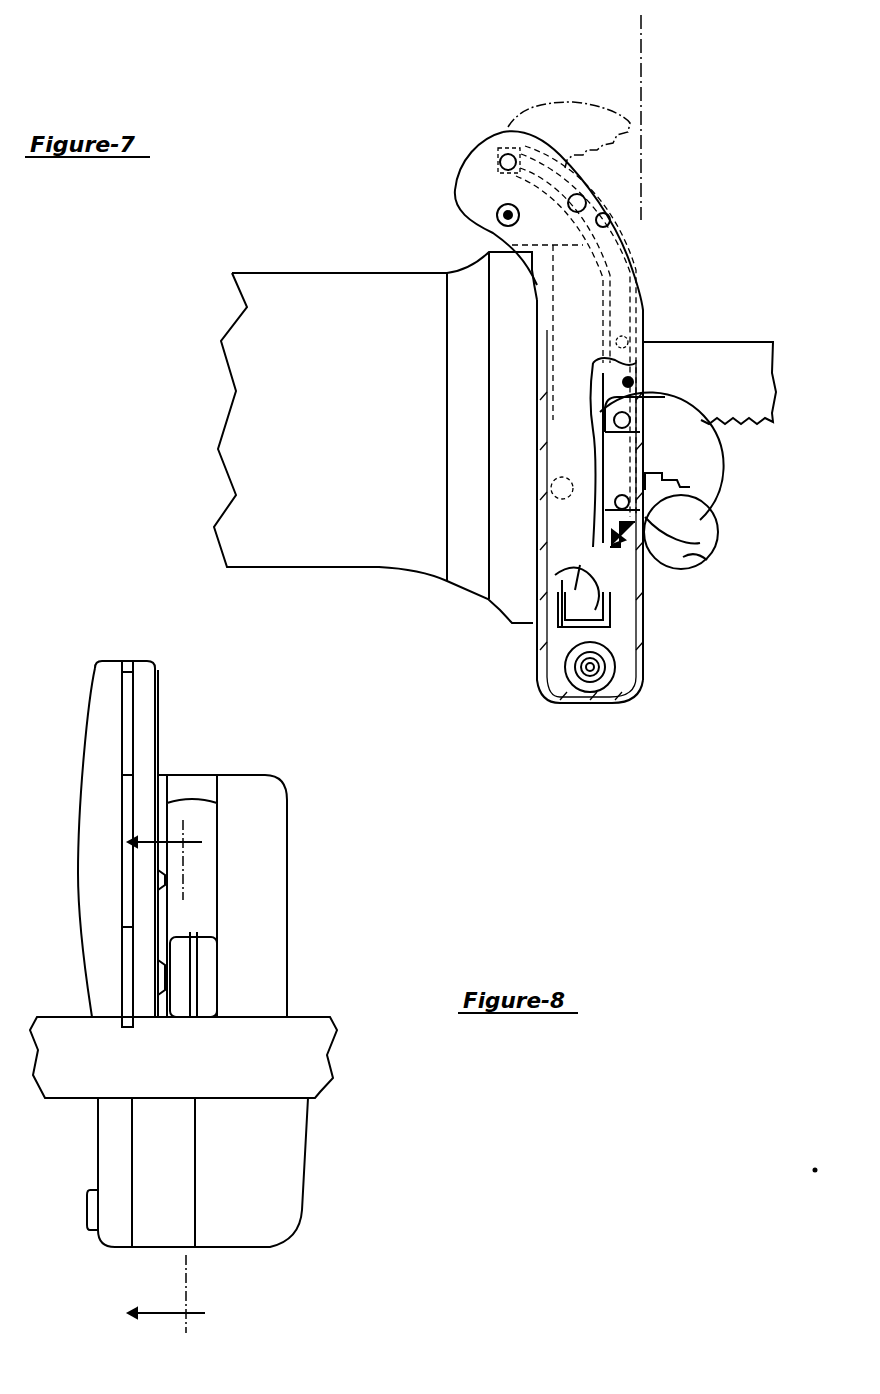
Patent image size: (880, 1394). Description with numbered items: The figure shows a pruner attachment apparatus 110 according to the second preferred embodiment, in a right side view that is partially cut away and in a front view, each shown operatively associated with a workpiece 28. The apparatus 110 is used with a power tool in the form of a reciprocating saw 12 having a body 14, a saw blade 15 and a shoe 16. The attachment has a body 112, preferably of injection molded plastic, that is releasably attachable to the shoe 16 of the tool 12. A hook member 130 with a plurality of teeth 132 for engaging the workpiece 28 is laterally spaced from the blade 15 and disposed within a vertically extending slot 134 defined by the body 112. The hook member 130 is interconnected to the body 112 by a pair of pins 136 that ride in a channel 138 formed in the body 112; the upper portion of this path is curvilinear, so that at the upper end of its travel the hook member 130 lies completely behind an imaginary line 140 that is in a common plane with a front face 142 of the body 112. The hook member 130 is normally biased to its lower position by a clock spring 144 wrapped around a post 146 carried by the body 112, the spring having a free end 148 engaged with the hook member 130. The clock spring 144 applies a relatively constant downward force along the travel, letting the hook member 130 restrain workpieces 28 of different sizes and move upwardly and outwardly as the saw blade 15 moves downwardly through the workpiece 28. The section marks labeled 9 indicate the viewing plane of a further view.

In FIG. 7, the reciprocating saw 12 is at (283, 260).
In FIG. 8, the reciprocating saw 12 is at (300, 790).
In FIG. 7, the body 14 is at (375, 270).
In FIG. 8, the body 14 is at (267, 776).
In FIG. 7, the saw blade 15 is at (740, 352).
In FIG. 8, the saw blade 15 is at (197, 990).
In FIG. 7, the shoe 16 is at (592, 603).
In FIG. 7, the workpiece 28 is at (707, 560).
In FIG. 8, the workpiece 28 is at (325, 1098).
In FIG. 7, the pruner attachment apparatus 110 is at (700, 192).
In FIG. 8, the pruner attachment apparatus 110 is at (253, 699).
In FIG. 7, the body 112 is at (660, 697).
In FIG. 8, the body 112 is at (320, 1235).
In FIG. 7, the hook member 130 is at (567, 97).
In FIG. 8, the hook member 130 is at (130, 985).
In FIG. 7, the teeth 132 is at (717, 520).
In FIG. 8, the slot 134 is at (120, 717).
In FIG. 7, the pins 136 is at (647, 423).
In FIG. 7, the channel 138 is at (650, 372).
In FIG. 7, the imaginary line 140 is at (642, 58).
In FIG. 7, the front face 142 is at (647, 313).
In FIG. 7, the clock spring 144 is at (627, 697).
In FIG. 7, the post 146 is at (572, 678).
In FIG. 7, the free end 148 is at (648, 560).
In FIG. 8, the section line 9 is at (168, 1076).